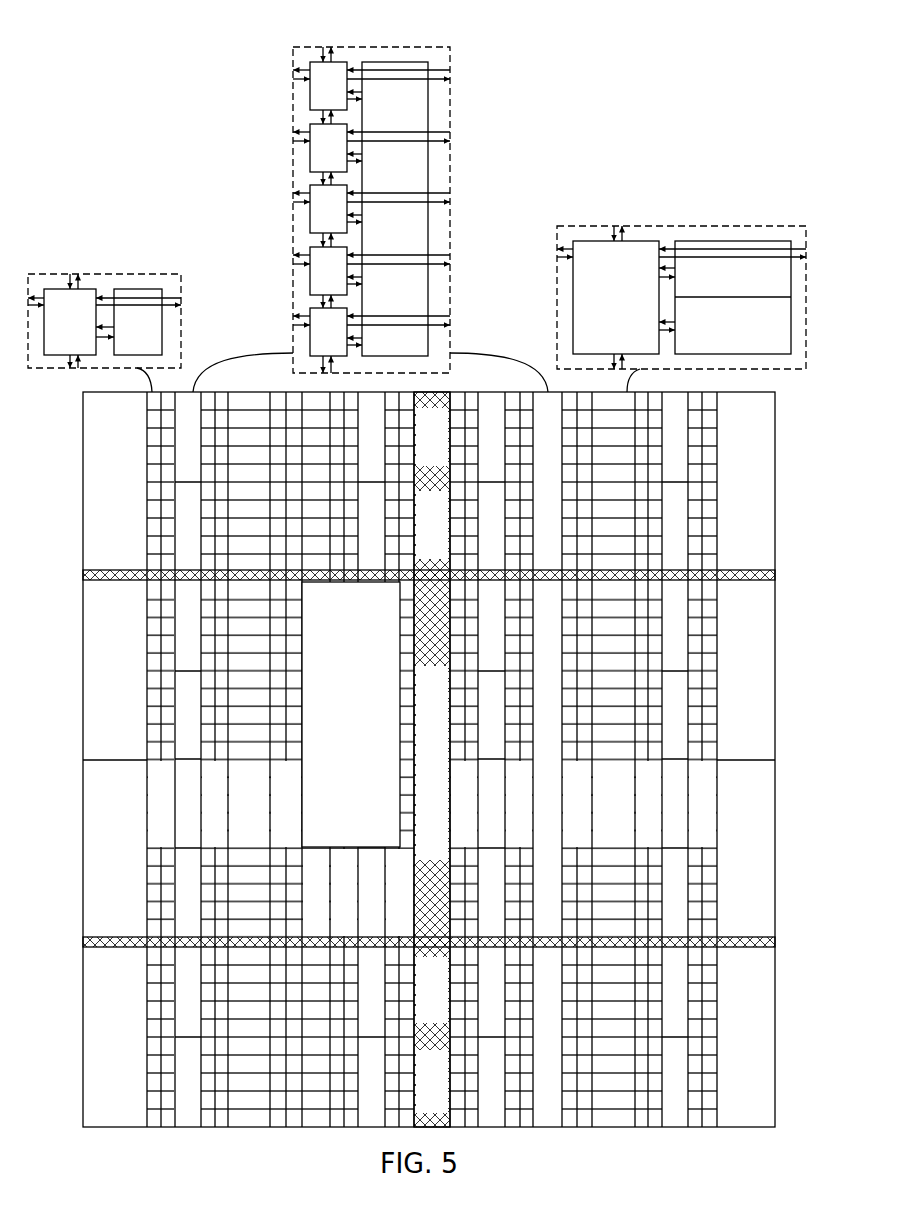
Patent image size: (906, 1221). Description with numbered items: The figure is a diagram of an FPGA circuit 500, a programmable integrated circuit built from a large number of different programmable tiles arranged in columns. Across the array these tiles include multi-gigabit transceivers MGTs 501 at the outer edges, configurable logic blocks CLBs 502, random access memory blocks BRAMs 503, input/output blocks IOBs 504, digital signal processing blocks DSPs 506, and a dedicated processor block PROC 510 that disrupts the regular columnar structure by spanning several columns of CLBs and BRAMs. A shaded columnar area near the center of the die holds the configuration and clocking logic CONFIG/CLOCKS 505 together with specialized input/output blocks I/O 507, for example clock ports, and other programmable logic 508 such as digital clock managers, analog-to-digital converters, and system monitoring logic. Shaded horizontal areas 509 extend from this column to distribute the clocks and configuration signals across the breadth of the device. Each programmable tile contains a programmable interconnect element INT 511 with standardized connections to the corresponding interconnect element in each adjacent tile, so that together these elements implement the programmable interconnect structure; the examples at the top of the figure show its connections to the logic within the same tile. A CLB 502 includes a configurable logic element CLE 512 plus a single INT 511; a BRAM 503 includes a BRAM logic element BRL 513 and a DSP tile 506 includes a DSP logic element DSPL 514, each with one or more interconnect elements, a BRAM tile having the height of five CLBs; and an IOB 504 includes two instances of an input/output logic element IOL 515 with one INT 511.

The FPGA circuit 500 is at (731, 90).
The multi-gigabit transceivers 501 is at (429, 826).
The configurable logic blocks 502 is at (127, 273).
The random access memory blocks 503 is at (292, 108).
The input/output blocks 504 is at (705, 225).
The configuration and clocking logic 505 is at (432, 759).
The digital signal processing blocks 506 is at (547, 804).
The specialized input/output blocks 507 is at (432, 757).
The other programmable logic 508 is at (433, 760).
The horizontal areas 509 is at (83, 940).
The dedicated processor block 510 is at (351, 714).
The programmable interconnect element 511 is at (417, 210).
The configurable logic element 512 is at (138, 322).
The BRAM logic element 513 is at (395, 209).
The DSP logic element 514 is at (395, 230).
The input/output logic element 515 is at (733, 297).